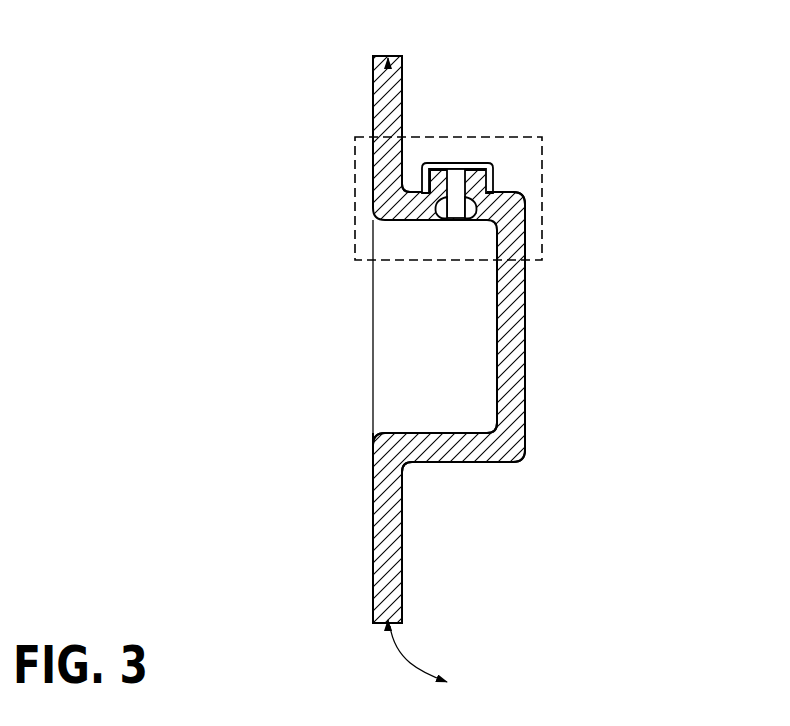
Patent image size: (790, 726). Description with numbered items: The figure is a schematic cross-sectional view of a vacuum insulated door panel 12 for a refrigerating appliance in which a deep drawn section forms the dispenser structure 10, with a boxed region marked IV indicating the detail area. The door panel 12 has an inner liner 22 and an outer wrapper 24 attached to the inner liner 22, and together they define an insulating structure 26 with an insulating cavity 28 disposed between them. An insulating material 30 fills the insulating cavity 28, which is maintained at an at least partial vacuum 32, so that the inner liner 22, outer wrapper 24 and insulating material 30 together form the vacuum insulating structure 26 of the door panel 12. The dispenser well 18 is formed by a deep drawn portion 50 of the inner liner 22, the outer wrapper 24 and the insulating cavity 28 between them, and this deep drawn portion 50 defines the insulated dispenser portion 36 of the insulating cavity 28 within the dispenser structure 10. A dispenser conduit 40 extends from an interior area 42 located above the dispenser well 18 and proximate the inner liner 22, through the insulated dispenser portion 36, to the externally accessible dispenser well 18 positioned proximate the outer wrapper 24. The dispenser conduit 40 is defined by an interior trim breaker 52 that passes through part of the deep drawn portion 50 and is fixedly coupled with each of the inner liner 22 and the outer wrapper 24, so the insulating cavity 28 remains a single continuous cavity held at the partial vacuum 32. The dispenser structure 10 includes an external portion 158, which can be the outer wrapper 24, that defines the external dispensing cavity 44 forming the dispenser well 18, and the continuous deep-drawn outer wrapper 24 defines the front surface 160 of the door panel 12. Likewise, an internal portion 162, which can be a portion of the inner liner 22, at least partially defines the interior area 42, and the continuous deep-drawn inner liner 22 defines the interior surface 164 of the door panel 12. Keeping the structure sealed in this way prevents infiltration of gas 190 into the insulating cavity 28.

The dispenser structure 10 is at (606, 284).
The vacuum insulated door panel 12 is at (363, 77).
The dispenser well 18 is at (397, 383).
The inner liner 22 is at (402, 70).
The outer wrapper 24 is at (373, 98).
The insulating structure 26 is at (429, 97).
The insulating cavity 28 is at (489, 446).
The insulating material 30 is at (398, 543).
The at least partial vacuum 32 is at (387, 487).
The insulated dispenser portion 36 is at (466, 127).
The dispenser conduit 40 is at (454, 229).
The interior area 42 is at (531, 193).
The external dispensing cavity 44 is at (471, 310).
The deep drawn portion 50 is at (536, 376).
The interior trim breaker 52 is at (420, 178).
The external portion 158 is at (497, 282).
The front surface 160 is at (497, 338).
The internal portion 162 is at (526, 283).
The interior surface 164 is at (526, 323).
The gas 190 is at (447, 662).
The section view IV indicator IV is at (546, 138).